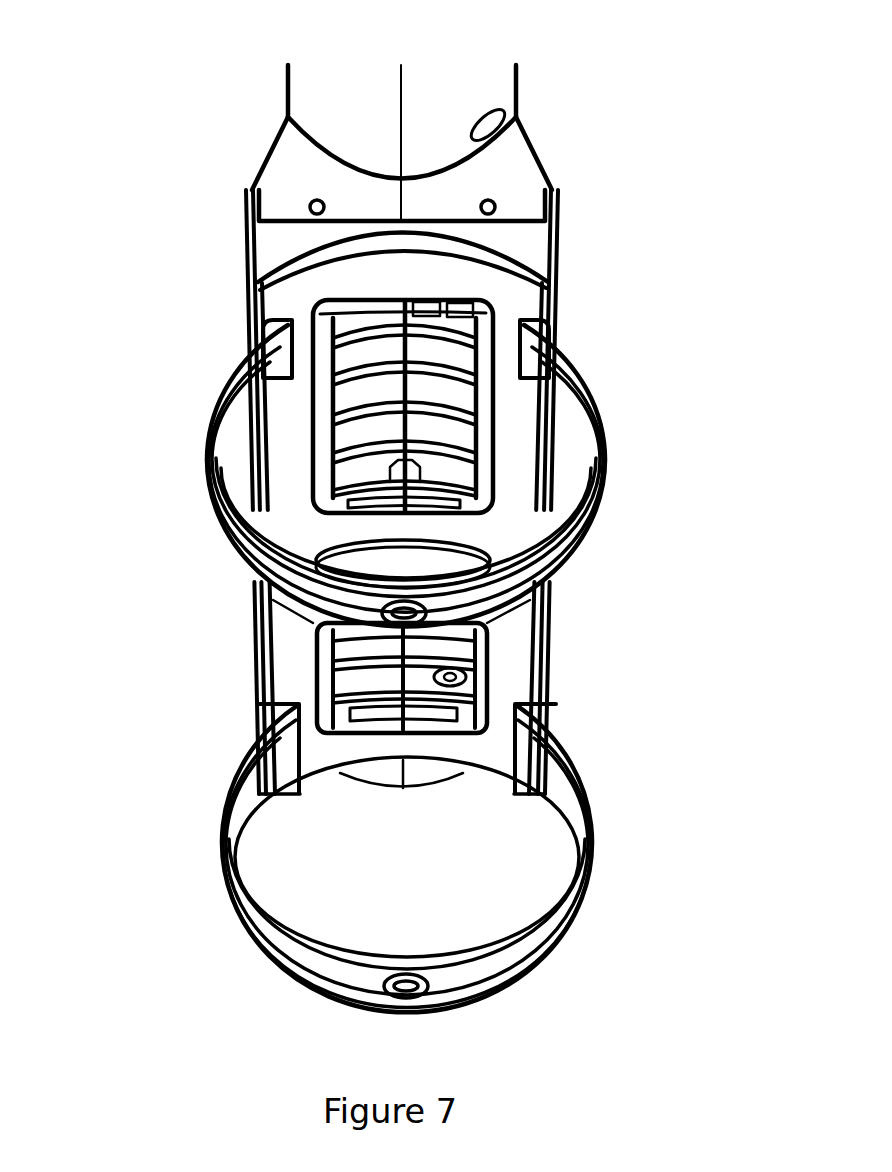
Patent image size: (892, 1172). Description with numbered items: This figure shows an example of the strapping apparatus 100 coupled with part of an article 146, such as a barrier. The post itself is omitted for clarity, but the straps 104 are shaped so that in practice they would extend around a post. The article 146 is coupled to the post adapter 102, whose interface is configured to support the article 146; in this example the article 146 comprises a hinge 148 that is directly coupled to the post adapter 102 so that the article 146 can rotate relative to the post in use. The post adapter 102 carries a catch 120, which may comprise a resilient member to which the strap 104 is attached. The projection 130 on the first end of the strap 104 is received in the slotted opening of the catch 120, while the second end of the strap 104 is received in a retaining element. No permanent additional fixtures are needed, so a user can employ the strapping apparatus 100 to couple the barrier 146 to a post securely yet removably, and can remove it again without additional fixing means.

The strapping apparatus 100 is at (184, 178).
The post adapter 102 is at (246, 258).
The strap 104 is at (210, 476).
The catch 120 is at (477, 328).
The projection 130 is at (466, 685).
The article 146 is at (582, 79).
The hinge 148 is at (544, 167).